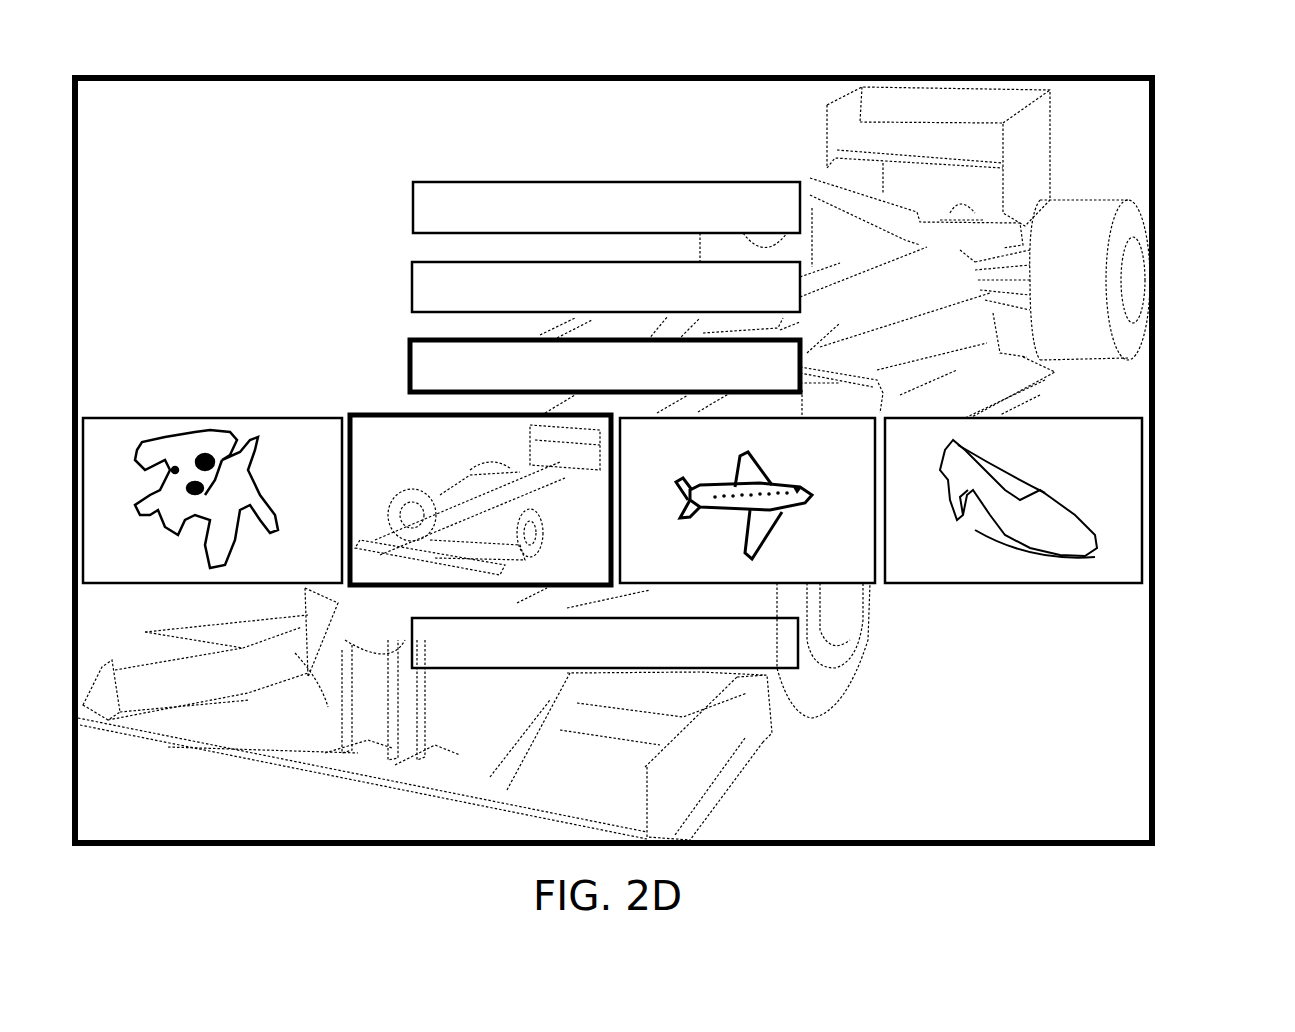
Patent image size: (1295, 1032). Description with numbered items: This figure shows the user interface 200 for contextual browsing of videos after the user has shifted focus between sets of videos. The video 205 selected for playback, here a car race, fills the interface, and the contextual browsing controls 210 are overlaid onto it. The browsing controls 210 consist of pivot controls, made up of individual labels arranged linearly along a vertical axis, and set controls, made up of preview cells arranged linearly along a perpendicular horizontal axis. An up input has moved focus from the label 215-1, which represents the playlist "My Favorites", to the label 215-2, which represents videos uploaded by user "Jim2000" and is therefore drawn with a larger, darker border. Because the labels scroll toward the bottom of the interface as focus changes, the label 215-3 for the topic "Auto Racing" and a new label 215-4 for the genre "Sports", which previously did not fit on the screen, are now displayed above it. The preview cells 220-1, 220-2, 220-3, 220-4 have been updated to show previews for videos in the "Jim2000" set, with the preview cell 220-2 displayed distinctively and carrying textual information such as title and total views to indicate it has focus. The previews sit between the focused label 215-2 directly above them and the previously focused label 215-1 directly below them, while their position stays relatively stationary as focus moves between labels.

The user interface 200 is at (1155, 103).
The video 205 is at (843, 705).
The contextual browsing controls 210 is at (1165, 178).
The label 215-1 is at (412, 660).
The label 215-2 is at (410, 358).
The label 215-3 is at (412, 282).
The label 215-4 is at (413, 197).
The preview cell 220-1 is at (155, 583).
The preview cell 220-2 is at (403, 585).
The preview cell 220-3 is at (652, 583).
The preview cell 220-4 is at (903, 583).